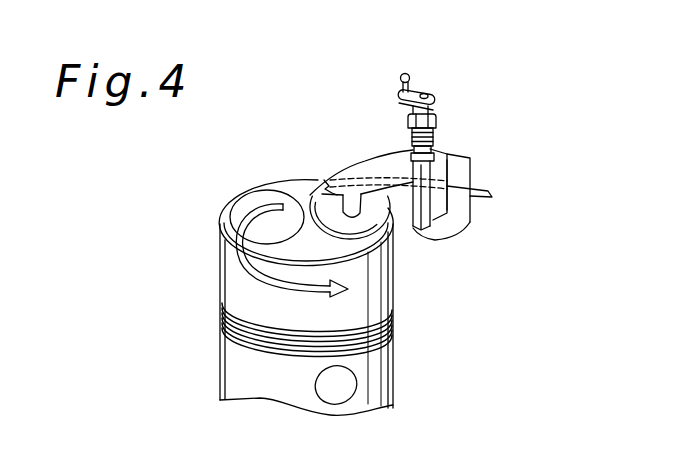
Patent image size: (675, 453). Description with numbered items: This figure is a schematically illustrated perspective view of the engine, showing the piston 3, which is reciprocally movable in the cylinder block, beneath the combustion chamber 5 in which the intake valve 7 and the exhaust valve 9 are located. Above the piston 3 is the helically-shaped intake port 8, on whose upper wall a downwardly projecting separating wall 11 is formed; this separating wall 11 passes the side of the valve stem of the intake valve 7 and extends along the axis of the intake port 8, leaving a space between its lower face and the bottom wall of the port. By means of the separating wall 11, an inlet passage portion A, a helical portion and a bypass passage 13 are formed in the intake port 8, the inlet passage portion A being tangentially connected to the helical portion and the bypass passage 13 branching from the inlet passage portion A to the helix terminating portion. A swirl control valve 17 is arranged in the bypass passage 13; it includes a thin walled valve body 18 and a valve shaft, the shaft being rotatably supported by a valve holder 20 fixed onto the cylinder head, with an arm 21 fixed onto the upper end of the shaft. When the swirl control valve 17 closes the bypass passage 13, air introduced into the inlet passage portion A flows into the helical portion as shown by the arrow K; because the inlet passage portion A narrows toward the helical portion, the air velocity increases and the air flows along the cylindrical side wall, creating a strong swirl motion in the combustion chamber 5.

The piston 3 is at (237, 366).
The combustion chamber 5 is at (295, 185).
The intake valve 7 is at (353, 226).
The helically-shaped intake port 8 is at (448, 217).
The exhaust valve 9 is at (252, 207).
The separating wall 11 is at (450, 198).
The bypass passage 13 is at (438, 170).
The swirl control valve 17 is at (420, 142).
The thin walled valve body 18 is at (418, 195).
The valve holder 20 is at (436, 150).
The arm 21 is at (413, 93).
The inlet passage portion A is at (462, 168).
The arrow K is at (481, 190).